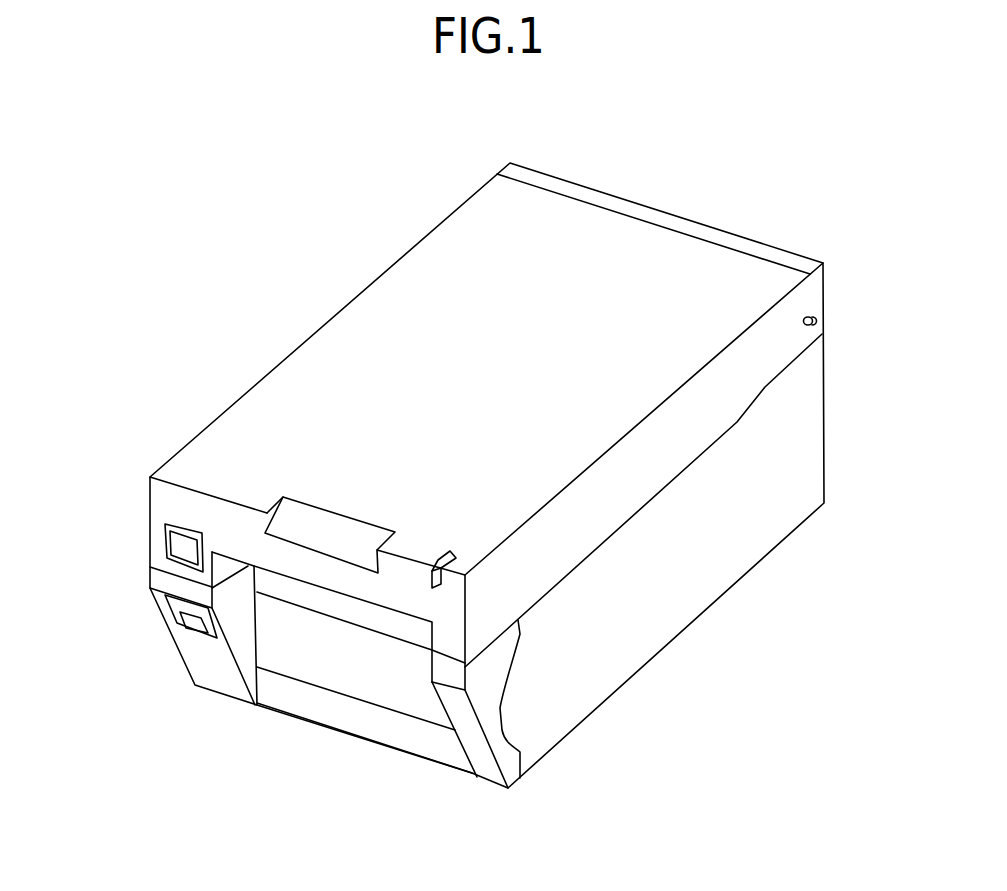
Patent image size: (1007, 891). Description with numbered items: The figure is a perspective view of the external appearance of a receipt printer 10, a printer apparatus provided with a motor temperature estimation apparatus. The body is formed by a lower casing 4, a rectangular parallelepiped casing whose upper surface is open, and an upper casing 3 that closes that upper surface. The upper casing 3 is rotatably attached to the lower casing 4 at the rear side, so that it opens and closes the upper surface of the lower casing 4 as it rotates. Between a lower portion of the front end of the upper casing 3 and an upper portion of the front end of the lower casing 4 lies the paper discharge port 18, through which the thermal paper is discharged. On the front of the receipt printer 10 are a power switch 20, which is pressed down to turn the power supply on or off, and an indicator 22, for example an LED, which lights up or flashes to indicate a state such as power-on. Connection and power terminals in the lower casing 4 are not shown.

The receipt printer 10 is at (757, 178).
The upper casing 3 is at (683, 253).
The lower casing 4 is at (715, 585).
The paper discharge port 18 is at (335, 603).
The power switch 20 is at (168, 623).
The indicator 22 is at (480, 574).